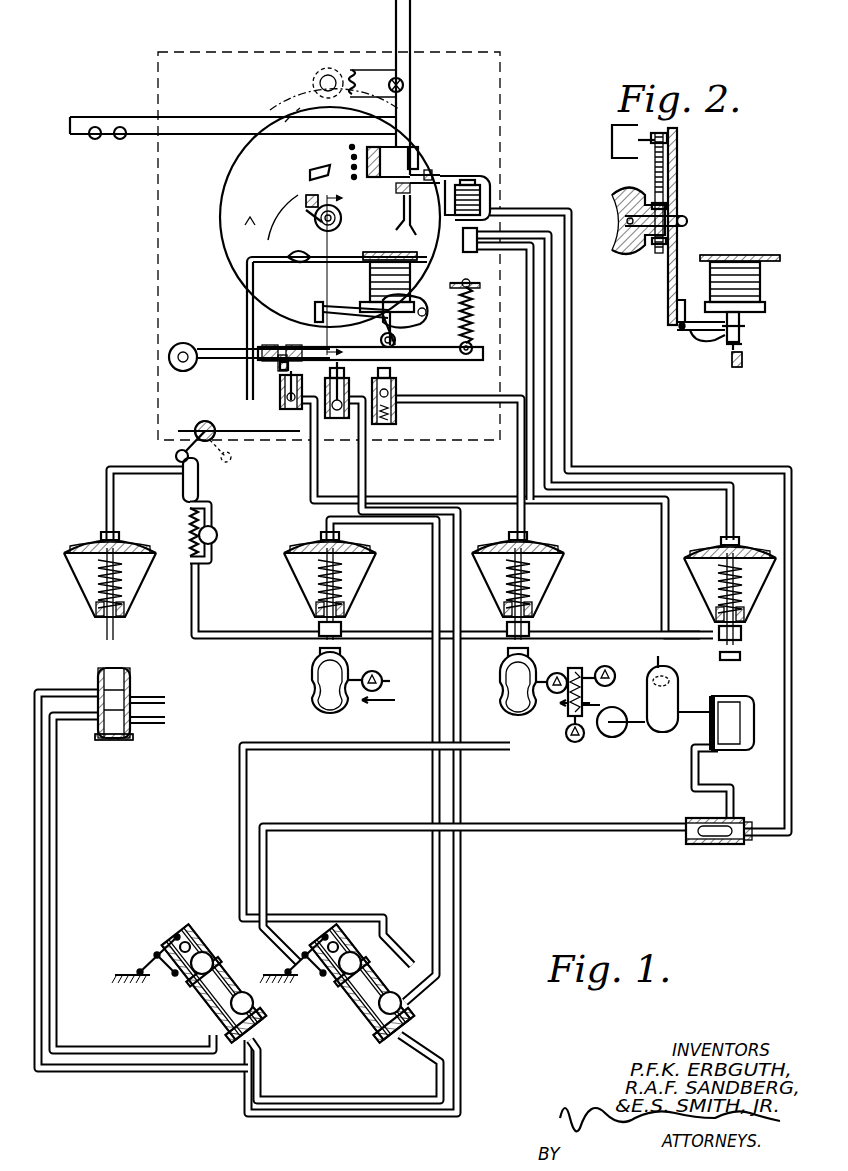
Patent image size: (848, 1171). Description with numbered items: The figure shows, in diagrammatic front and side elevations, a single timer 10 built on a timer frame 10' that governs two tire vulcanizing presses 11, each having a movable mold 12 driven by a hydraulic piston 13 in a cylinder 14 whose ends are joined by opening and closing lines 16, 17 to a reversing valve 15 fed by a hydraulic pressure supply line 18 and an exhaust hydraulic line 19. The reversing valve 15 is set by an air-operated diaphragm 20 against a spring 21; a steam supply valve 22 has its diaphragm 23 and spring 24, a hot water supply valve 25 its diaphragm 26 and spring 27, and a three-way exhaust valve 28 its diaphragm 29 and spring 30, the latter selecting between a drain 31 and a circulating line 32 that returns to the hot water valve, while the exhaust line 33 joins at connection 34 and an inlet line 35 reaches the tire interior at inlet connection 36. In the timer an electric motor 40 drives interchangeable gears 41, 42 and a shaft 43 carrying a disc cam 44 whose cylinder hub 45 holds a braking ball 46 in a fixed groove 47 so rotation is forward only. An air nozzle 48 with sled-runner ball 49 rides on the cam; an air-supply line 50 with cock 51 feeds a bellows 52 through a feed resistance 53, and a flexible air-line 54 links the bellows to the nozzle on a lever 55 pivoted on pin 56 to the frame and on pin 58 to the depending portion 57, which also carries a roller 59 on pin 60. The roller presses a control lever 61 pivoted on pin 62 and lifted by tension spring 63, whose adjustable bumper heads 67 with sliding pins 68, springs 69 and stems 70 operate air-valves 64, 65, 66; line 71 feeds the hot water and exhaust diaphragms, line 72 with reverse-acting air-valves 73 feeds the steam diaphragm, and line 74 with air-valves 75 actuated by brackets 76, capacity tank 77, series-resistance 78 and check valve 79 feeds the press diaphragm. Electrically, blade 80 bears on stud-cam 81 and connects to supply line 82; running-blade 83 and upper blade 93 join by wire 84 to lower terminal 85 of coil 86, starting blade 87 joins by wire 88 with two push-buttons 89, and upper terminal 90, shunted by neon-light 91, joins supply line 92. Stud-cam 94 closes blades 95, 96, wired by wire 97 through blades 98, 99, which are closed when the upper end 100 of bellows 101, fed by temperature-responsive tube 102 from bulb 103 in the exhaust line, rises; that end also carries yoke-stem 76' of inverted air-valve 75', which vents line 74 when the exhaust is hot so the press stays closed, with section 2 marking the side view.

In FIG. 1, the timer 10 is at (347, 246).
In FIG. 1, the timer frame 10' is at (491, 300).
In FIG. 1, the tire vulcanizing press 11 is at (190, 940).
In FIG. 1, the movable mold 12 is at (255, 1000).
In FIG. 1, the hydraulic piston 13 is at (200, 1010).
In FIG. 1, the hydraulic cylinder 14 is at (220, 1030).
In FIG. 1, the reversing valve 15 is at (120, 678).
In FIG. 1, the opening line 16 is at (205, 1022).
In FIG. 1, the closing line 17 is at (232, 1062).
In FIG. 1, the hydraulic pressure supply line 18 is at (165, 700).
In FIG. 1, the exhaust hydraulic line 19 is at (165, 720).
In FIG. 1, the air-operated diaphragm 20 is at (140, 560).
In FIG. 1, the spring 21 is at (118, 575).
In FIG. 1, the steam supply valve 22 is at (312, 685).
In FIG. 1, the air-operated diaphragm 23 is at (358, 555).
In FIG. 1, the spring 24 is at (340, 578).
In FIG. 1, the hot water supply valve 25 is at (500, 686).
In FIG. 1, the air-operated diaphragm 26 is at (548, 560).
In FIG. 1, the spring 27 is at (530, 582).
In FIG. 1, the exhaust valve 28 is at (754, 713).
In FIG. 1, the diaphragm 29 is at (752, 562).
In FIG. 1, the spring 30 is at (737, 582).
In FIG. 1, the drain 31 is at (735, 752).
In FIG. 1, the circulating line 32 is at (688, 705).
In FIG. 1, the exhaust line 33 is at (263, 860).
In FIG. 1, the exhaust connection 34 is at (350, 1008).
In FIG. 1, the inlet line 35 is at (240, 897).
In FIG. 1, the inlet connection 36 is at (268, 935).
In FIG. 1, the electric motor 40 is at (320, 78).
In FIG. 2, the electric motor 40 is at (628, 135).
In FIG. 1, the interchangeable gear 41 is at (300, 102).
In FIG. 2, the interchangeable gear 41 is at (655, 148).
In FIG. 1, the interchangeable gear 42 is at (290, 100).
In FIG. 2, the interchangeable gear 42 is at (655, 165).
In FIG. 1, the shaft 43 is at (338, 225).
In FIG. 2, the shaft 43 is at (625, 232).
In FIG. 1, the disc cam 44 is at (222, 218).
In FIG. 2, the disc cam 44 is at (677, 153).
In FIG. 1, the cylinder hub 45 is at (320, 225).
In FIG. 2, the cylinder hub 45 is at (668, 207).
In FIG. 1, the braking ball 46 is at (312, 207).
In FIG. 2, the braking ball 46 is at (668, 240).
In FIG. 1, the fixed groove 47 is at (306, 201).
In FIG. 1, the air nozzle 48 is at (322, 316).
In FIG. 2, the air nozzle 48 is at (680, 332).
In FIG. 1, the ball 49 is at (318, 303).
In FIG. 2, the ball 49 is at (685, 310).
In FIG. 1, the air-supply line 50 is at (335, 265).
In FIG. 1, the cock 51 is at (200, 422).
In FIG. 1, the bellows 52 is at (425, 272).
In FIG. 2, the bellows 52 is at (762, 282).
In FIG. 1, the feed resistance 53 is at (302, 265).
In FIG. 1, the flexible air-line 54 is at (425, 328).
In FIG. 2, the flexible air-line 54 is at (710, 342).
In FIG. 1, the lever 55 is at (428, 312).
In FIG. 1, the pin 56 is at (450, 287).
In FIG. 1, the depending portion 57 is at (395, 347).
In FIG. 2, the depending portion 57 is at (739, 315).
In FIG. 2, the pin 58 is at (745, 326).
In FIG. 1, the roller 59 is at (400, 350).
In FIG. 2, the roller 59 is at (742, 345).
In FIG. 1, the pin 60 is at (382, 335).
In FIG. 1, the control lever 61 is at (475, 360).
In FIG. 2, the control lever 61 is at (742, 360).
In FIG. 1, the pin 62 is at (183, 343).
In FIG. 1, the tension spring 63 is at (472, 325).
In FIG. 1, the air-valve 64 is at (280, 392).
In FIG. 1, the air-valve 65 is at (328, 385).
In FIG. 1, the air-valve 66 is at (374, 385).
In FIG. 1, the adjustable bumper head 67 is at (290, 348).
In FIG. 1, the sliding pin 68 is at (282, 366).
In FIG. 1, the spring 69 is at (290, 355).
In FIG. 1, the stem 70 is at (280, 382).
In FIG. 1, the line 71 is at (519, 458).
In FIG. 1, the line 72 is at (362, 462).
In FIG. 1, the reverse-acting air-valve 73 is at (258, 1025).
In FIG. 1, the line 74 is at (314, 462).
In FIG. 1, the reverse-acting air-valve 75 is at (514, 621).
In FIG. 1, the air-valve 75' is at (596, 384).
In FIG. 1, the bracket 76 is at (511, 654).
In FIG. 1, the U-shaped yoke-stem 76' is at (500, 197).
In FIG. 1, the capacity tank 77 is at (183, 492).
In FIG. 1, the series-resistance 78 is at (188, 518).
In FIG. 1, the check valve 79 is at (222, 513).
In FIG. 1, the blade 80 is at (352, 167).
In FIG. 1, the stud-cam 81 is at (312, 176).
In FIG. 1, the line 82 is at (410, 40).
In FIG. 1, the running-blade 83 is at (356, 178).
In FIG. 1, the wire 84 is at (412, 150).
In FIG. 1, the lower terminal 85 is at (368, 85).
In FIG. 1, the coil 86 is at (350, 90).
In FIG. 1, the starting blade 87 is at (352, 157).
In FIG. 1, the wire 88 is at (140, 117).
In FIG. 1, the push-button 89 is at (113, 137).
In FIG. 1, the upper terminal 90 is at (352, 68).
In FIG. 1, the neon-light 91 is at (403, 85).
In FIG. 1, the line 92 is at (396, 15).
In FIG. 1, the upper blade 93 is at (350, 146).
In FIG. 1, the stud-cam 94 is at (404, 200).
In FIG. 1, the blade 95 is at (400, 220).
In FIG. 1, the blade 96 is at (410, 219).
In FIG. 1, the wire 97 is at (428, 152).
In FIG. 1, the blade 98 is at (432, 176).
In FIG. 1, the blade 99 is at (430, 175).
In FIG. 1, the upper end 100 is at (497, 176).
In FIG. 1, the bellows 101 is at (495, 190).
In FIG. 1, the temperature-responsive tube 102 is at (572, 355).
In FIG. 1, the bulb 103 is at (715, 836).
In FIG. 1, the section line 2 is at (341, 275).